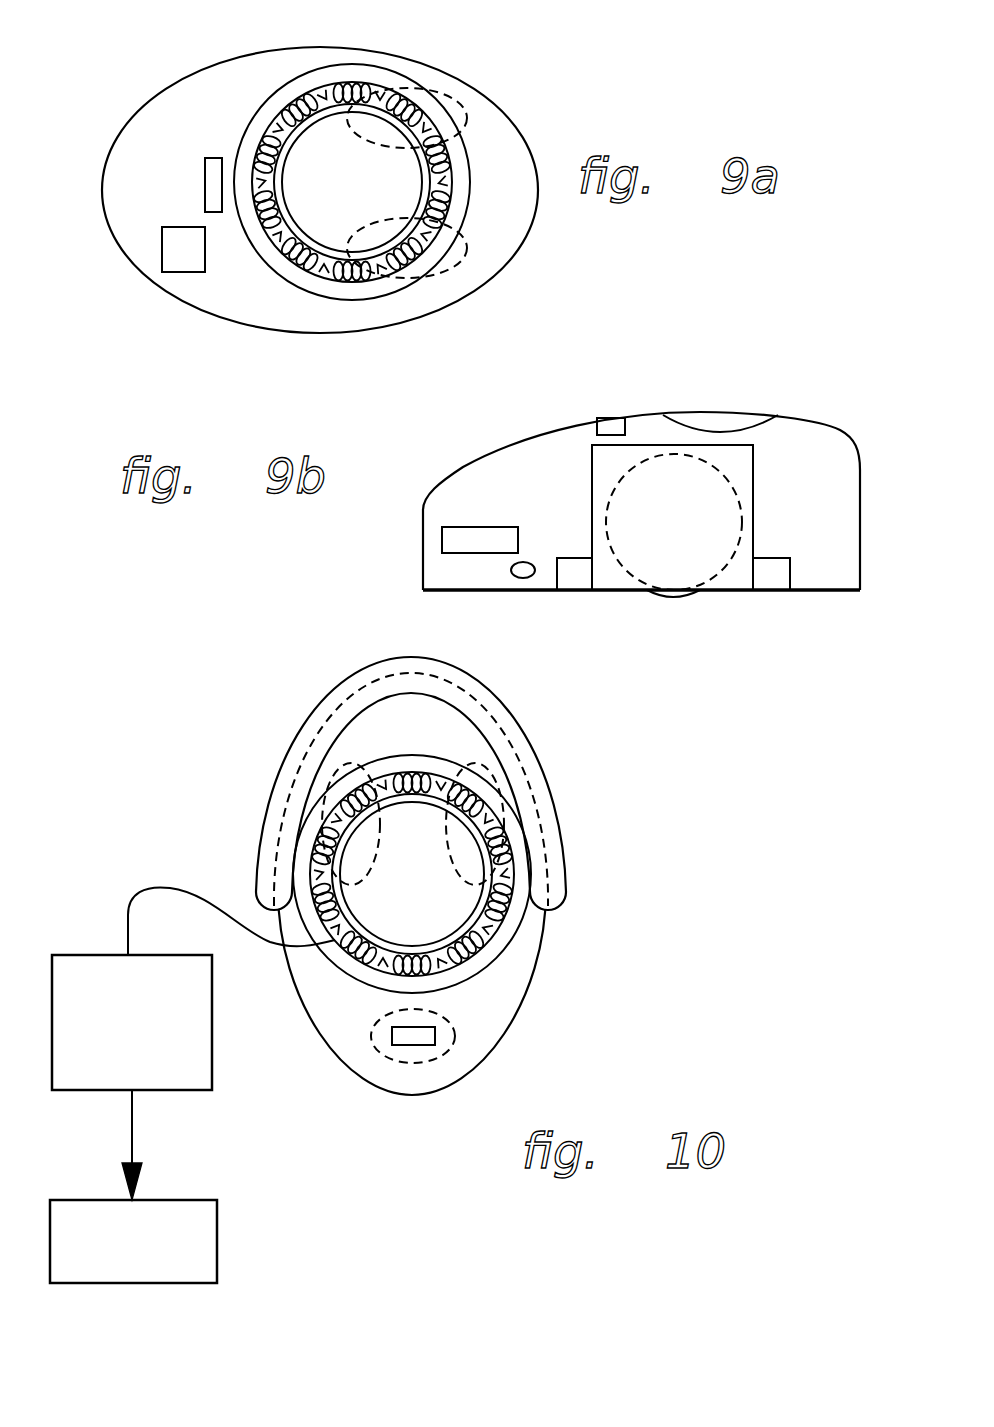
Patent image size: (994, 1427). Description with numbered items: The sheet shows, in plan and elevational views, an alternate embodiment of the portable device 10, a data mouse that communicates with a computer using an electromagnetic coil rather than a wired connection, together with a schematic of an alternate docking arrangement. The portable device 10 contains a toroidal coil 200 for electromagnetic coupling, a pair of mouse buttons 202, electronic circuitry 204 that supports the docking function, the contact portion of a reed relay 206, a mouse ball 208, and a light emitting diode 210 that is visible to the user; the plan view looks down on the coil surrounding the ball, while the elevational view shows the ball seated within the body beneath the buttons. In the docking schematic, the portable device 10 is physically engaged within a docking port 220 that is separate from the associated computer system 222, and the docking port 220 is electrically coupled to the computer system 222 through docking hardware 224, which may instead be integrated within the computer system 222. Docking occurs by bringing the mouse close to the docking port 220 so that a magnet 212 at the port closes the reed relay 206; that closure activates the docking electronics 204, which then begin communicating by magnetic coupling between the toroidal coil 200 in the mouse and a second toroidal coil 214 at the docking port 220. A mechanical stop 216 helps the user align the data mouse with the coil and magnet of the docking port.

In FIG. 9A, the portable device 10 is at (155, 95).
In FIG. 9B, the portable device 10 is at (465, 467).
In FIG. 9A, the toroidal coil 200 is at (447, 155).
In FIG. 9B, the toroidal coil 200 is at (572, 582).
In FIG. 9A, the mouse buttons 202 is at (462, 112).
In FIG. 9B, the mouse buttons 202 is at (713, 418).
In FIG. 9A, the electronic circuitry 204 is at (162, 243).
In FIG. 9B, the electronic circuitry 204 is at (452, 538).
In FIG. 9A, the reed relay 206 is at (215, 158).
In FIG. 9B, the reed relay 206 is at (508, 590).
In FIG. 9B, the mouse ball 208 is at (620, 575).
In FIG. 9B, the light emitting diode 210 is at (610, 420).
In FIG. 10, the magnet 212 is at (435, 1036).
In FIG. 10, the toroidal coil 214 is at (497, 930).
In FIG. 10, the mechanical stop 216 is at (565, 873).
In FIG. 10, the docking port 220 is at (320, 713).
In FIG. 10, the computer system 222 is at (217, 1212).
In FIG. 10, the docking hardware 224 is at (212, 1075).